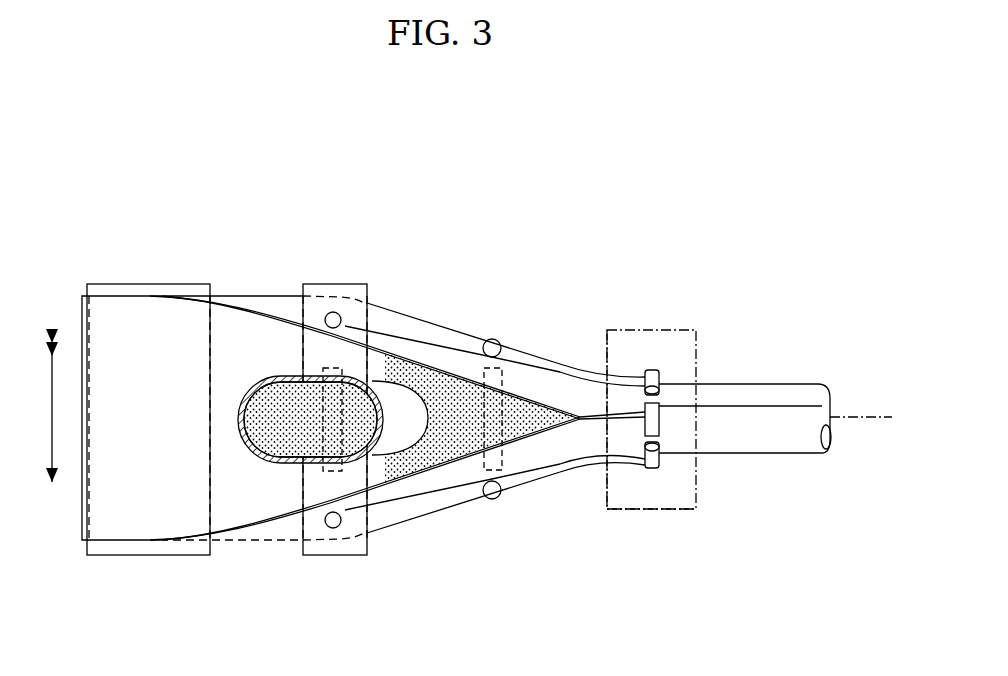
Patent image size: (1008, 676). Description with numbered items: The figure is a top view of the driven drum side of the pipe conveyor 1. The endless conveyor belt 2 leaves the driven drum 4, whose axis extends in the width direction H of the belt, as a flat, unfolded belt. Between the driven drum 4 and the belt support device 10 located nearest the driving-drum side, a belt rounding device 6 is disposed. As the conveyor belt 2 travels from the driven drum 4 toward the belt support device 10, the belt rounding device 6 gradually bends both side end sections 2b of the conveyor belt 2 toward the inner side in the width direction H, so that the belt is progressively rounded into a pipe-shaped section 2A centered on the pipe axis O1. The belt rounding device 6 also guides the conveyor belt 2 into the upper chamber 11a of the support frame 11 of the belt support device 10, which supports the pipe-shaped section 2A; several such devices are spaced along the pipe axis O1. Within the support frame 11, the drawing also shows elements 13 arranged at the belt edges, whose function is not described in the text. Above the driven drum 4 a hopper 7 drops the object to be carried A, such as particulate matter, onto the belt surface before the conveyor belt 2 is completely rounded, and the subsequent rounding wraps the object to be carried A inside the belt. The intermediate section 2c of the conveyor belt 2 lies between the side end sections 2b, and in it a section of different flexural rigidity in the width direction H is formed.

The pipe conveyor 1 is at (660, 128).
The conveyor belt 2 is at (127, 333).
The pipe-shaped section 2A is at (790, 384).
The side end sections 2b is at (430, 357).
The intermediate section 2c is at (742, 415).
The driven drum 4 is at (145, 555).
The belt rounding device 6 is at (312, 202).
The hopper 7 is at (251, 381).
The belt support device 10 is at (619, 307).
The support frame 11 is at (672, 330).
The upper chamber 11a is at (685, 502).
The fittings 13 is at (648, 370).
The object to be carried A is at (282, 463).
The width direction of the belt H is at (39, 412).
The pipe axis O1 is at (860, 417).